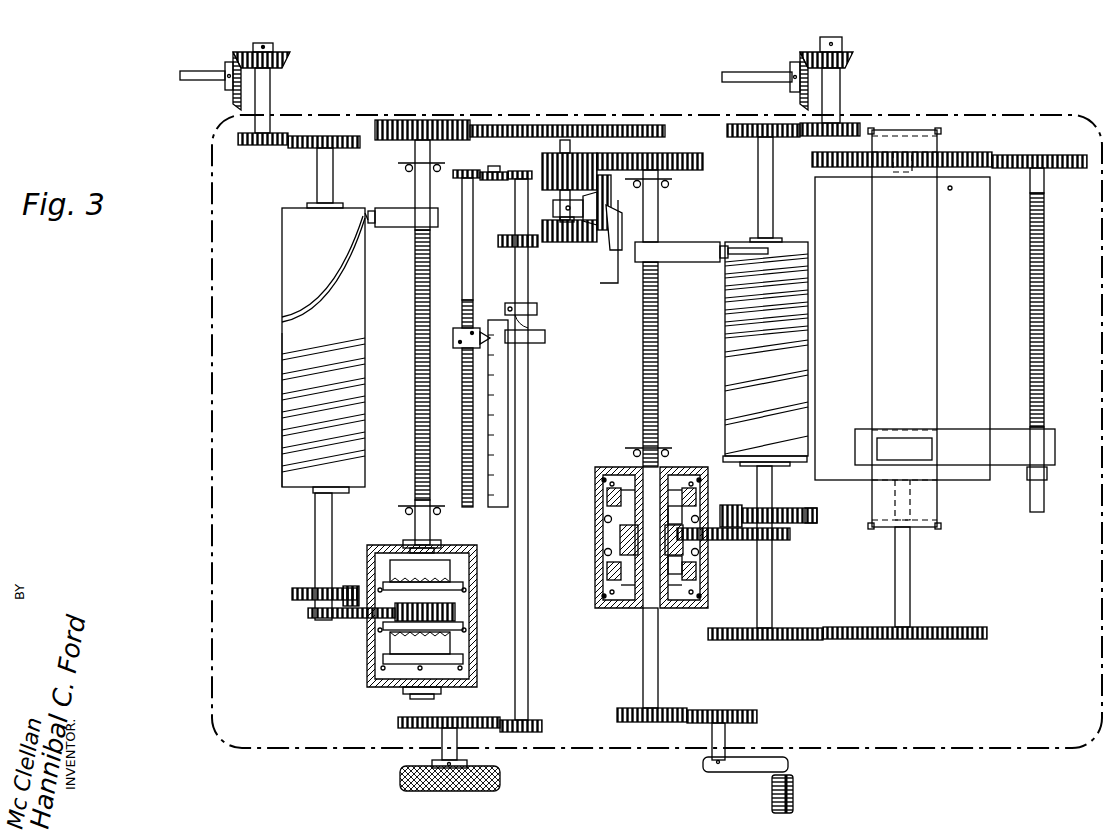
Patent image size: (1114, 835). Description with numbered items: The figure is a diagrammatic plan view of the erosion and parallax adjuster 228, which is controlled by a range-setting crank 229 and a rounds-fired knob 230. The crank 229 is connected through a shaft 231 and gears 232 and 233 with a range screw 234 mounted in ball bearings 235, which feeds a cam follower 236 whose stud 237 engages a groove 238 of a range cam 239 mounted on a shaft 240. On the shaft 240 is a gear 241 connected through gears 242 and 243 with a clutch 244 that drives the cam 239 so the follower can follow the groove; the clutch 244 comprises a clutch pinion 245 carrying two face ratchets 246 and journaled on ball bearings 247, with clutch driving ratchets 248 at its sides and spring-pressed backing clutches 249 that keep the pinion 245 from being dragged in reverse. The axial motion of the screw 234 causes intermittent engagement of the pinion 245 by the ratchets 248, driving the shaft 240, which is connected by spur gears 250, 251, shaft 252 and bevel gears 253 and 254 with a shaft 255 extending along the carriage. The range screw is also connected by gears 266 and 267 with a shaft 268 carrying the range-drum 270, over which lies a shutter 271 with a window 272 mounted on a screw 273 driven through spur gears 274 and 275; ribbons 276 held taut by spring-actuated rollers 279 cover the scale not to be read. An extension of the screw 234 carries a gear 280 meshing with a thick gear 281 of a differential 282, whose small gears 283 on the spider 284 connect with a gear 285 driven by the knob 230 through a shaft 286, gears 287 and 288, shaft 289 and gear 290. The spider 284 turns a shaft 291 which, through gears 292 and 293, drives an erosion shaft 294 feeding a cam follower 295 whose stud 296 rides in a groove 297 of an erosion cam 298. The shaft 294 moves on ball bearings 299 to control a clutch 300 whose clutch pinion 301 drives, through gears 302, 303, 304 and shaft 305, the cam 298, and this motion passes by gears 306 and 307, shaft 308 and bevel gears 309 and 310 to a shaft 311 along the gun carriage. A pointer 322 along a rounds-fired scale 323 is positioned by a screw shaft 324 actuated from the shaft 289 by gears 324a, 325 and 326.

The erosion and parallax adjuster 228 is at (210, 465).
The range-setting crank 229 is at (795, 794).
The rounds-fired knob 230 is at (500, 779).
The shaft 231 is at (722, 740).
The gear 232 is at (722, 712).
The gear 233 is at (624, 710).
The range screw 234 is at (643, 390).
The ball bearings 235 is at (670, 186).
The cam follower 236 is at (680, 252).
The stud 237 is at (725, 247).
The groove 238 is at (727, 348).
The range cam 239 is at (727, 372).
The shaft 240 is at (772, 579).
The gear 241 is at (808, 524).
The gear 242 is at (752, 510).
The gear 243 is at (728, 542).
The clutch 244 is at (598, 614).
The clutch pinion 245 is at (620, 540).
The face ratchets 246 is at (608, 506).
The ball bearings 247 is at (605, 519).
The clutch driving ratchets 248 is at (604, 484).
The spring-pressed backing clutches 249 is at (700, 496).
The spur gear 250 is at (745, 134).
The spur gear 251 is at (855, 125).
The shaft 252 is at (832, 82).
The bevel gear 253 is at (850, 56).
The bevel gear 254 is at (800, 62).
The shaft 255 is at (742, 78).
The gear 266 is at (780, 640).
The gear 267 is at (952, 639).
The shaft 268 is at (903, 572).
The range-drum 270 is at (965, 475).
The shutter 271 is at (990, 446).
The window 272 is at (922, 447).
The screw 273 is at (1040, 392).
The spur gear 274 is at (955, 156).
The spur gear 275 is at (1030, 160).
The ribbons 276 is at (925, 223).
The spring-actuated rollers 279 is at (920, 130).
The gear 280 is at (662, 158).
The gear 281 is at (586, 160).
The differential 282 is at (607, 244).
The small gears 283 is at (618, 287).
The spider 284 is at (553, 208).
The gear 285 is at (548, 240).
The shaft 286 is at (445, 742).
The gear 287 is at (447, 718).
The gear 288 is at (527, 722).
The shaft 289 is at (515, 530).
The gear 290 is at (506, 247).
The shaft 291 is at (565, 150).
The gear 292 is at (568, 130).
The gear 293 is at (440, 130).
The erosion shaft 294 is at (422, 172).
The cam follower 295 is at (395, 228).
The stud 296 is at (372, 218).
The groove 297 is at (365, 343).
The erosion cam 298 is at (355, 362).
The ball bearings 299 is at (408, 510).
The clutch 300 is at (364, 640).
The clutch pinion 301 is at (395, 612).
The gear 302 is at (318, 614).
The gear 303 is at (345, 600).
The gear 304 is at (300, 590).
The shaft 305 is at (322, 565).
The gear 306 is at (318, 140).
The gear 307 is at (270, 138).
The shaft 308 is at (263, 88).
The bevel gear 309 is at (278, 60).
The bevel gear 310 is at (235, 75).
The shaft 311 is at (180, 76).
The pointer 322 is at (484, 330).
The rounds-fired scale 323 is at (508, 415).
The screw shaft 324 is at (462, 332).
The gear 324a is at (522, 171).
The gear 325 is at (500, 183).
The gear 326 is at (468, 170).